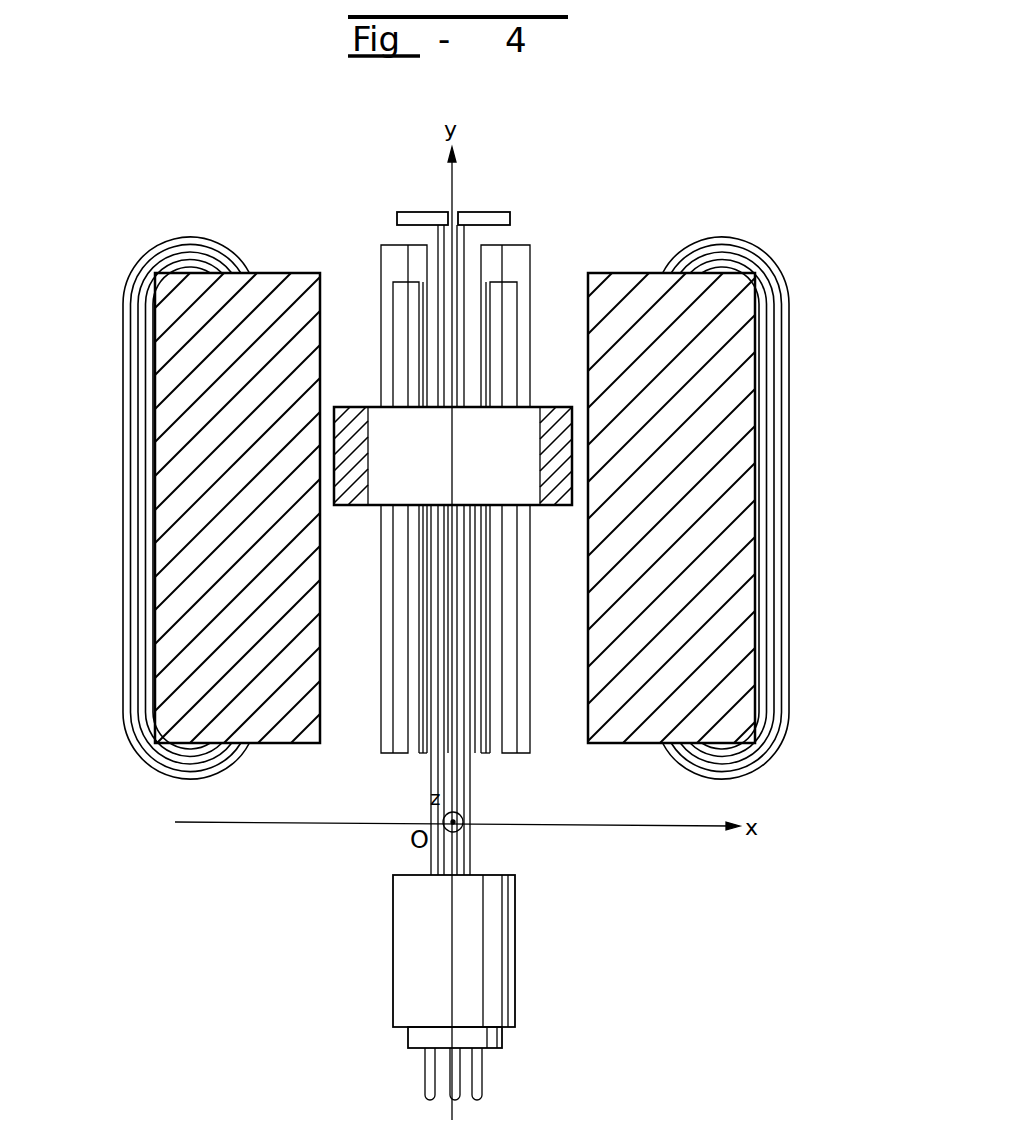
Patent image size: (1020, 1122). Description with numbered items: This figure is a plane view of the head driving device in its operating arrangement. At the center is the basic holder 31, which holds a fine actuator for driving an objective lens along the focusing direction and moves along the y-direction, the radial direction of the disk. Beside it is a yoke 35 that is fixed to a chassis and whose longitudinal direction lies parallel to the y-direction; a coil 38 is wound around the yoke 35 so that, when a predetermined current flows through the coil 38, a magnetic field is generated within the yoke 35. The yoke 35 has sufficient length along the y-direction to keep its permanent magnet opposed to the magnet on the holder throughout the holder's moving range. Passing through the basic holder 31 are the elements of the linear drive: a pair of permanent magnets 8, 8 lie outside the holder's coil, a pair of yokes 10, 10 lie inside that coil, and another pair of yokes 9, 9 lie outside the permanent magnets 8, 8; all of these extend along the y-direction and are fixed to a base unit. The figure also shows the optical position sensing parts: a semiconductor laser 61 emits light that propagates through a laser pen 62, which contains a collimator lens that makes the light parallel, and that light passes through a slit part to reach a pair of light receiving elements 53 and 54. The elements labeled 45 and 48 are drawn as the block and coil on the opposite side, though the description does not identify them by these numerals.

The permanent magnet 8 is at (398, 755).
The yoke 9 is at (380, 748).
The yoke 10 is at (423, 757).
The basic holder 31 is at (382, 432).
The yoke 35 is at (620, 290).
The coil 38 is at (785, 497).
The left magnet pole block 45 is at (288, 305).
The left magnet coil 48 is at (130, 485).
The light receiving element 53 is at (480, 212).
The light receiving element 54 is at (418, 212).
The semiconductor laser 61 is at (505, 1042).
The laser pen 62 is at (498, 937).